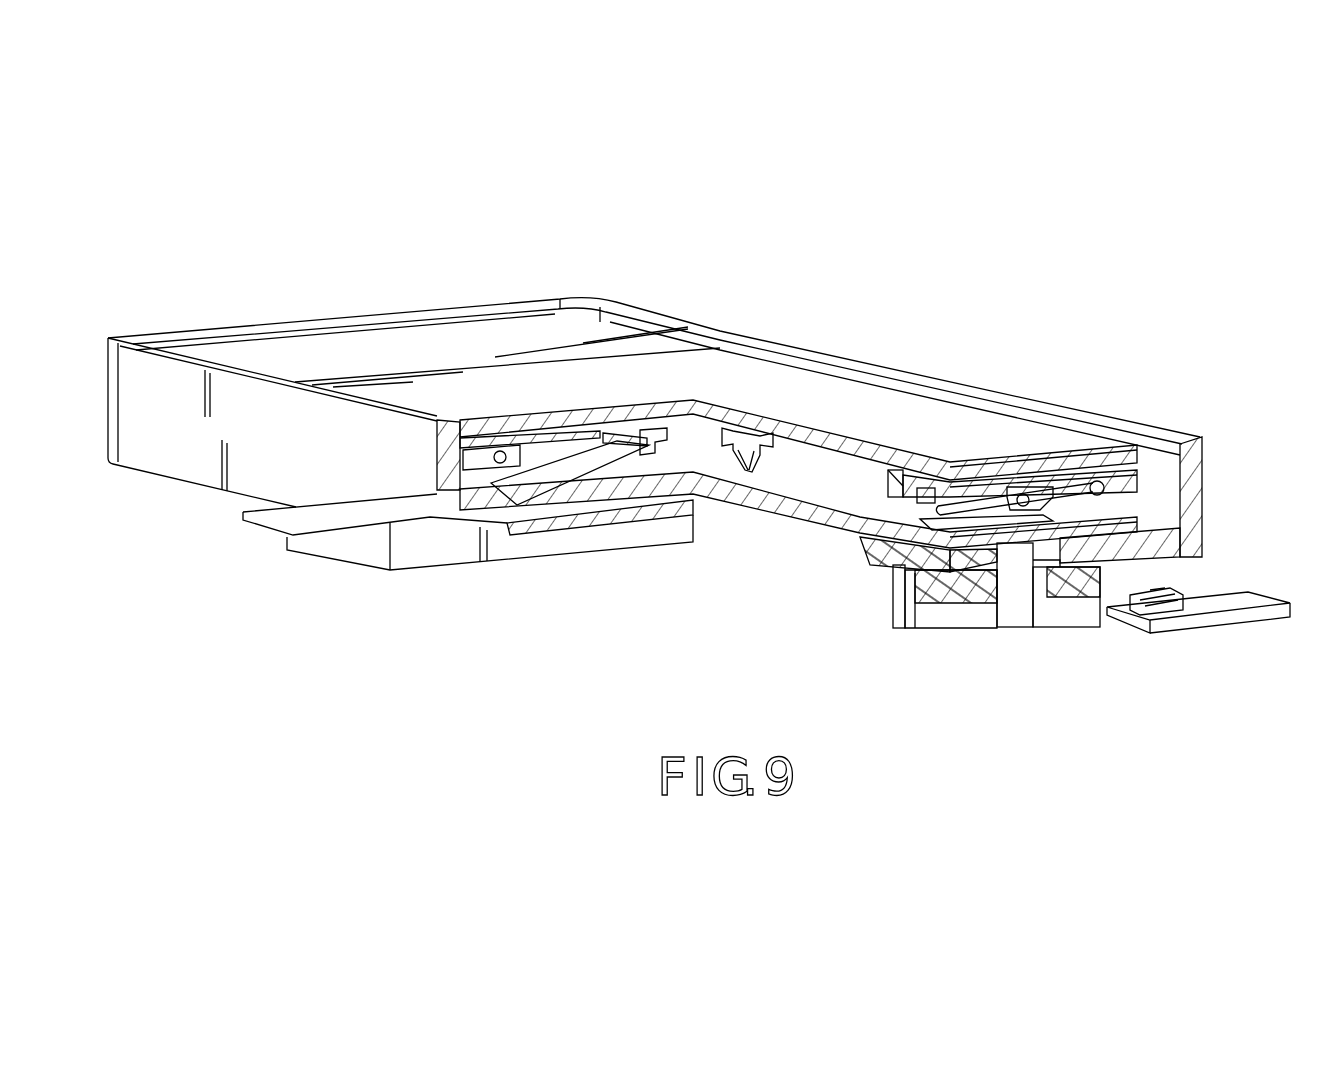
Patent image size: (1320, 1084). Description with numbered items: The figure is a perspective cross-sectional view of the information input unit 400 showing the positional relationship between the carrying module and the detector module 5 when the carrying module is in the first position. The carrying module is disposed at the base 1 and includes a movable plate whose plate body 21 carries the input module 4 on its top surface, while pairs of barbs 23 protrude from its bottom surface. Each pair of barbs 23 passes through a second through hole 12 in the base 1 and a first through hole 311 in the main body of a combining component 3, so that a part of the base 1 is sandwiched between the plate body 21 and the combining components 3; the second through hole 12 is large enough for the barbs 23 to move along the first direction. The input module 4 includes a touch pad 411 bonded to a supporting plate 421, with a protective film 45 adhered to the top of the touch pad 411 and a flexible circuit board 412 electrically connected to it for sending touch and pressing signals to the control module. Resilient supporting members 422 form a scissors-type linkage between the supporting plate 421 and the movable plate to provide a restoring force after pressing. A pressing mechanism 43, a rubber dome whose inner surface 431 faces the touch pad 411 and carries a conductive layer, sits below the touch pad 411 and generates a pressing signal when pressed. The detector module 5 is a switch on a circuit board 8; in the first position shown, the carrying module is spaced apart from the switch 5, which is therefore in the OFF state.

The information input unit 400 is at (840, 296).
The base 1 is at (940, 370).
The input module 4 is at (662, 366).
The protective film 45 is at (1107, 443).
The touch pad 411 is at (1127, 460).
The supporting plate 421 is at (1140, 480).
The resilient supporting members 422 is at (1026, 490).
The inner surface 431 is at (745, 428).
The pressing mechanism 43 is at (765, 462).
The flexible circuit board 412 is at (540, 468).
The plate body 21 is at (807, 507).
The second through holes 12 is at (1078, 549).
The combining components 3 is at (428, 543).
The barbs 23 is at (1012, 610).
The first through holes 311 is at (1042, 585).
The detector module 5 is at (1192, 590).
The circuit board 8 is at (1235, 620).